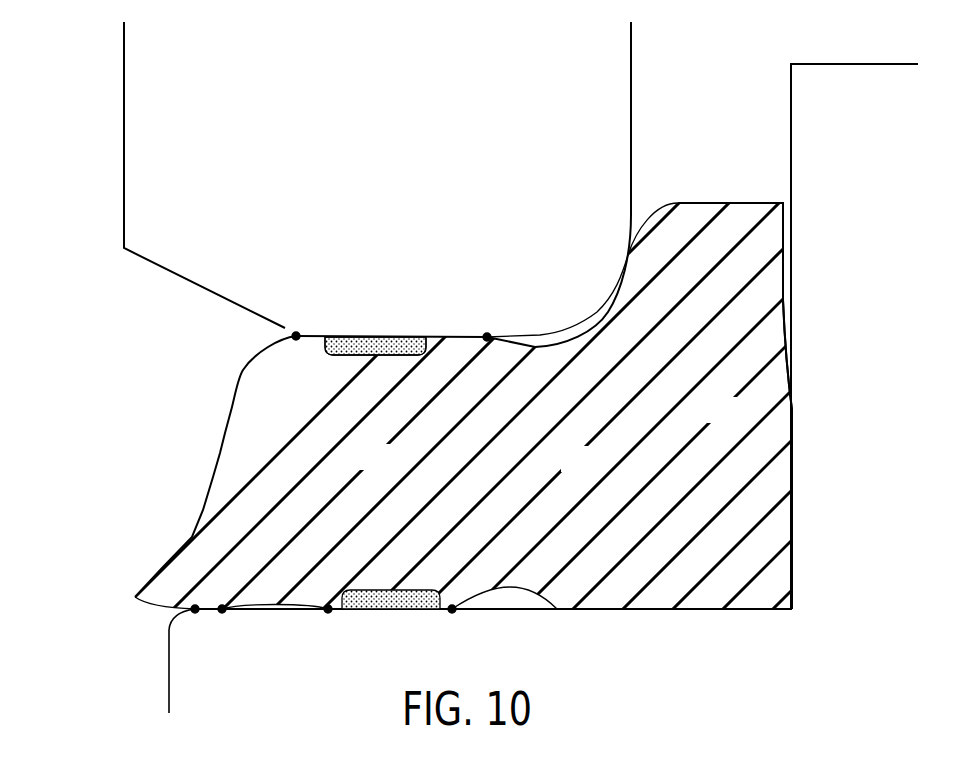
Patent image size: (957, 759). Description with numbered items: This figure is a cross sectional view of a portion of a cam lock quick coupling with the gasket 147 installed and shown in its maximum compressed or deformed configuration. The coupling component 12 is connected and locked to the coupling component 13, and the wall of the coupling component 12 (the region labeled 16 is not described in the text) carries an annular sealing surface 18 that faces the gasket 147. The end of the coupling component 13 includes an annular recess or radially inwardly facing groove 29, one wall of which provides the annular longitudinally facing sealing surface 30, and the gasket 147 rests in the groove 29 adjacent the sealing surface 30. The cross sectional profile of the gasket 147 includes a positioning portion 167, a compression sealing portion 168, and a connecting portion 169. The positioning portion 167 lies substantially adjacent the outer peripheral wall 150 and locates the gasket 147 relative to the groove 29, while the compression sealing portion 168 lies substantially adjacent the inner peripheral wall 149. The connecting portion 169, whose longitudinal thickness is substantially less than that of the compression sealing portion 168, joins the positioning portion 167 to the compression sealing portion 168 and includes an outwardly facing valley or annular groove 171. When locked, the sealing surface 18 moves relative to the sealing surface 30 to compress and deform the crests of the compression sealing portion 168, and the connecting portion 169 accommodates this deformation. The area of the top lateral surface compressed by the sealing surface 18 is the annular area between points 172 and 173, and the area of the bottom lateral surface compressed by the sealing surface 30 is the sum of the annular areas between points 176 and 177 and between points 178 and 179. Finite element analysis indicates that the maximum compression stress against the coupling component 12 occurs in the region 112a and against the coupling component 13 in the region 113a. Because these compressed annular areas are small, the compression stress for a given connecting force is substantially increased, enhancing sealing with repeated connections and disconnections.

The coupling component 12 is at (187, 104).
The coupling component 13 is at (274, 702).
The cylinder wall 16 is at (155, 153).
The sealing surface 18 is at (391, 336).
The groove 29 is at (791, 242).
The sealing surface 30 is at (705, 609).
The region of maximum compression stress 112a is at (353, 335).
The region of maximum compression stress 113a is at (382, 603).
The gasket 147 is at (190, 395).
The inner peripheral wall 149 is at (216, 468).
The outer peripheral wall 150 is at (792, 440).
The positioning portion 167 is at (702, 420).
The compression sealing portion 168 is at (353, 467).
The connecting portion 169 is at (562, 469).
The annular groove 171 is at (555, 337).
The point 172 is at (487, 335).
The point 173 is at (296, 334).
The point 176 is at (452, 612).
The point 177 is at (328, 612).
The point 178 is at (222, 612).
The point 179 is at (195, 612).